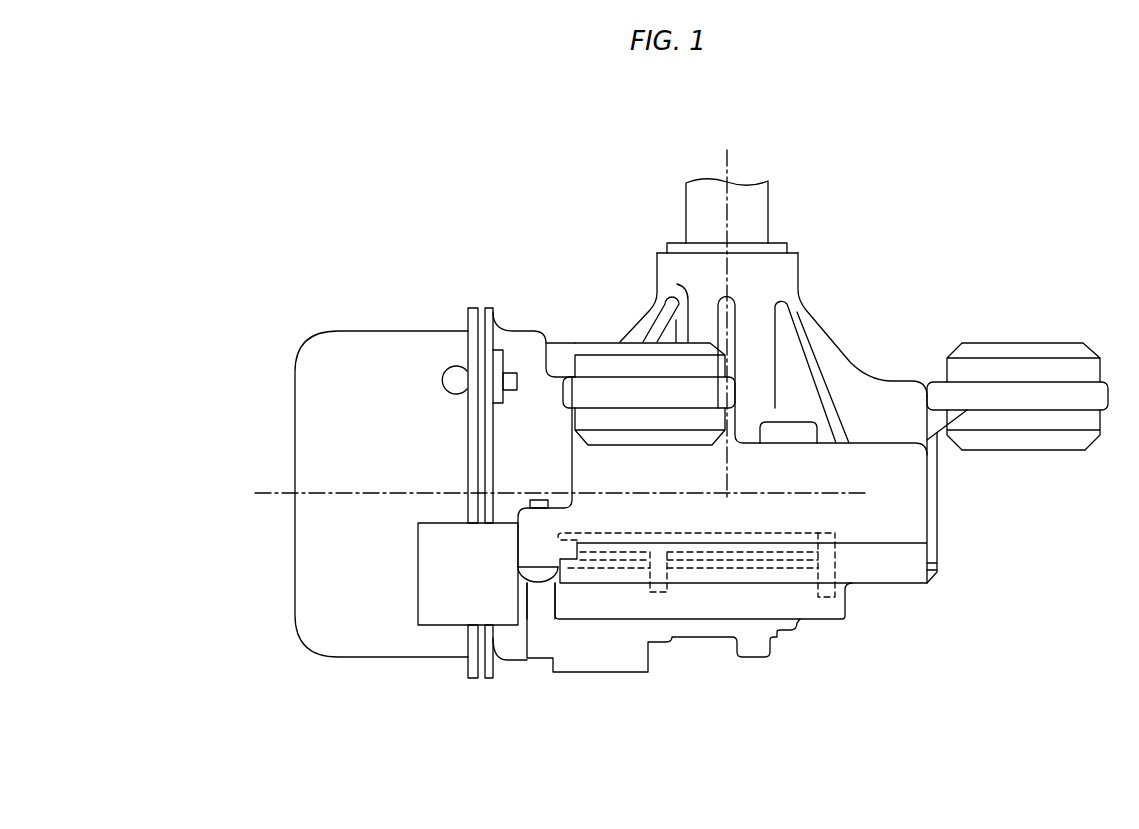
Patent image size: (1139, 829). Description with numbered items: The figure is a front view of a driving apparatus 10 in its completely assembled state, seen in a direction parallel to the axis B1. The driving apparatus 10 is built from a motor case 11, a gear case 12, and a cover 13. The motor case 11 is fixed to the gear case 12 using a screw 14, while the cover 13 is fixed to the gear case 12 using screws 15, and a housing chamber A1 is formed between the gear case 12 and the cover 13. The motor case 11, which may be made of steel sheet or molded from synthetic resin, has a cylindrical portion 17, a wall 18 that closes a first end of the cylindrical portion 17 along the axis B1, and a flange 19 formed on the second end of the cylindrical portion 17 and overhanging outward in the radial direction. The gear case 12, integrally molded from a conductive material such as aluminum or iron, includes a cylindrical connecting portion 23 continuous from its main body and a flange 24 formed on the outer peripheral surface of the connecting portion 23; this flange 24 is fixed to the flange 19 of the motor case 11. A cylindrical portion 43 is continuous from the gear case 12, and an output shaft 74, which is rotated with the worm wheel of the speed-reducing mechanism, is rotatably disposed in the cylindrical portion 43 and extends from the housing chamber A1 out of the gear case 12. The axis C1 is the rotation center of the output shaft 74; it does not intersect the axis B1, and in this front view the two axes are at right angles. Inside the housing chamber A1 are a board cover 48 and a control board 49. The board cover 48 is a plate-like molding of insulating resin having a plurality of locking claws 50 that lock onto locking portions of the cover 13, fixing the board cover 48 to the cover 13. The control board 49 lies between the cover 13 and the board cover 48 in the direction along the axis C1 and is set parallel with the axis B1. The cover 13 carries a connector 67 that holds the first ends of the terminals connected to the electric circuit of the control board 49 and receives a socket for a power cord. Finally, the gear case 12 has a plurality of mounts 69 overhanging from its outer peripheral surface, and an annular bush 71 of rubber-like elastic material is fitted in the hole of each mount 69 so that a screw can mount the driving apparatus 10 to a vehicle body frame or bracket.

The driving apparatus 10 is at (442, 150).
The motor case 11 is at (374, 317).
The gear case 12 is at (955, 575).
The cover 13 is at (813, 632).
The screw 14 is at (462, 380).
The screws 15 is at (538, 579).
The cylindrical portion 17 is at (340, 652).
The wall 18 is at (295, 577).
The flange 19 is at (465, 428).
The connecting portion 23 is at (535, 435).
The flange 24 is at (497, 643).
The cylindrical portion 43 is at (670, 277).
The board cover 48 is at (818, 525).
The control board 49 is at (721, 592).
The locking claws 50 is at (657, 593).
The connector 67 is at (438, 607).
The mounts 69 is at (612, 390).
The bush 71 is at (580, 365).
The output shaft 74 is at (757, 227).
The housing chamber A1 is at (828, 462).
The axis B1 is at (278, 493).
The axis C1 is at (727, 155).